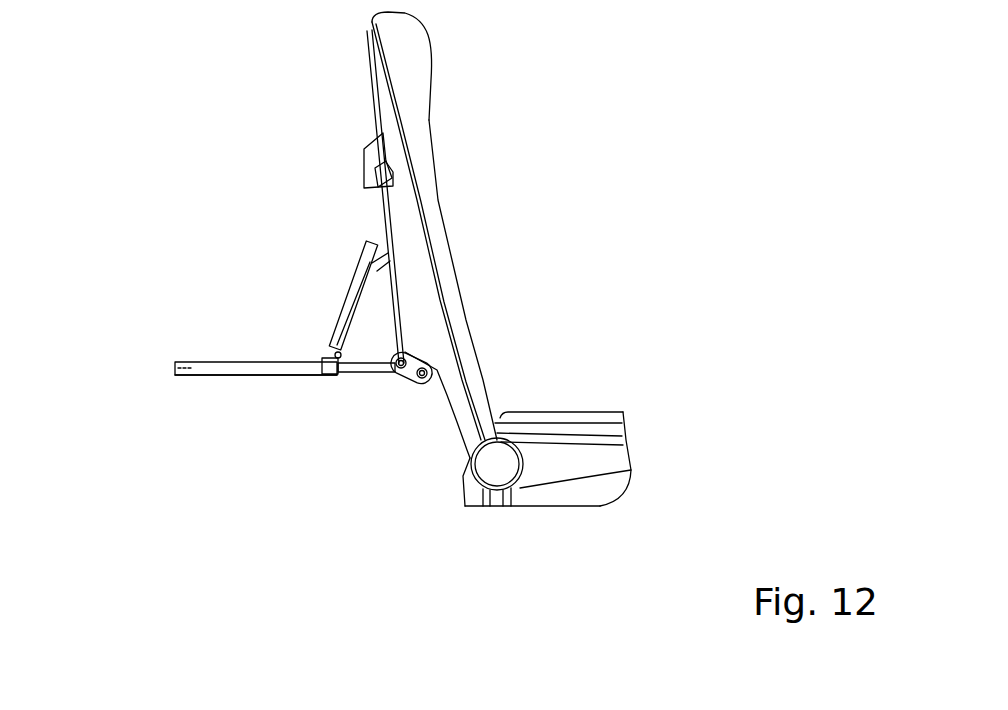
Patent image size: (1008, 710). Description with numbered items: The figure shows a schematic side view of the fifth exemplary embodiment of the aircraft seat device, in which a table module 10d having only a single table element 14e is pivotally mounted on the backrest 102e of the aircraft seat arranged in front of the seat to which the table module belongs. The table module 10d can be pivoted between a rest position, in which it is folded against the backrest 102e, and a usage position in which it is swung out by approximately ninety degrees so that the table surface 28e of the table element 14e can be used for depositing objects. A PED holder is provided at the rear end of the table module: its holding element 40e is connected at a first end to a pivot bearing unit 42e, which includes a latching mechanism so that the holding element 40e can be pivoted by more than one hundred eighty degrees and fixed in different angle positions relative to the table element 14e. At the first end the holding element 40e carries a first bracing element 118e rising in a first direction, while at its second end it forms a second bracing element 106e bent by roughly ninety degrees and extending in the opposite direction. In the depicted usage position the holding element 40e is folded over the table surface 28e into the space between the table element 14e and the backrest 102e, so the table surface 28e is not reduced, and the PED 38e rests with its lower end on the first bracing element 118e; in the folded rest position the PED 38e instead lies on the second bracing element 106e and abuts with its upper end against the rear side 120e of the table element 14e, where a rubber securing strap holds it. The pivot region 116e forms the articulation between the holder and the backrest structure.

The vehicle seat 10d is at (226, 233).
The table element 14e is at (175, 366).
The table surface 28e is at (222, 356).
The PED 38e is at (362, 246).
The holding element 40e is at (357, 308).
The pivot bearing unit 42e is at (351, 386).
The backrest 102e is at (428, 195).
The second bracing element 106e is at (393, 252).
The pivot bracket 116e is at (408, 392).
The bracing element 118e is at (331, 377).
The rear side 120e is at (210, 384).